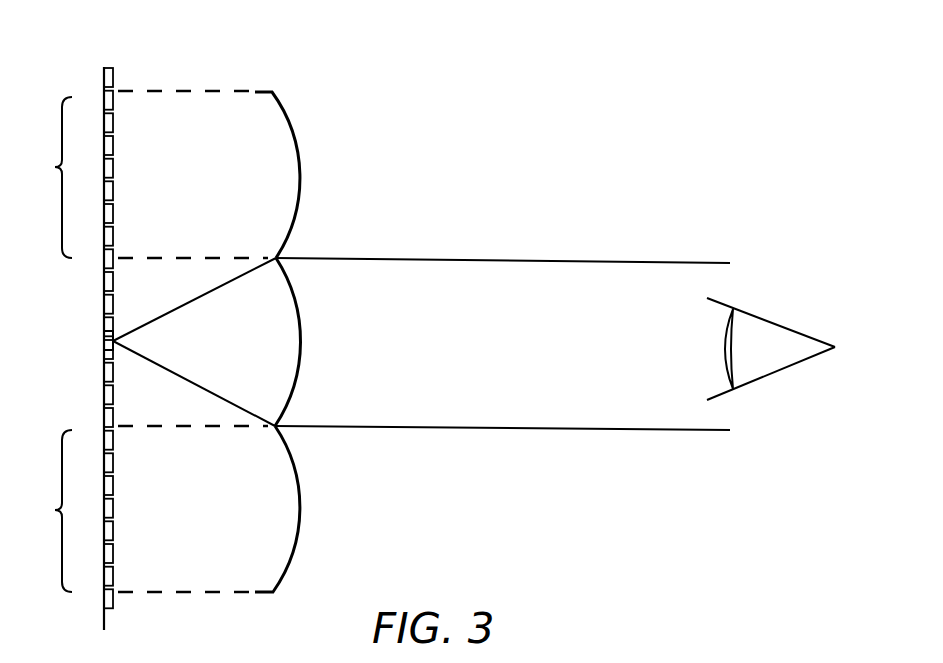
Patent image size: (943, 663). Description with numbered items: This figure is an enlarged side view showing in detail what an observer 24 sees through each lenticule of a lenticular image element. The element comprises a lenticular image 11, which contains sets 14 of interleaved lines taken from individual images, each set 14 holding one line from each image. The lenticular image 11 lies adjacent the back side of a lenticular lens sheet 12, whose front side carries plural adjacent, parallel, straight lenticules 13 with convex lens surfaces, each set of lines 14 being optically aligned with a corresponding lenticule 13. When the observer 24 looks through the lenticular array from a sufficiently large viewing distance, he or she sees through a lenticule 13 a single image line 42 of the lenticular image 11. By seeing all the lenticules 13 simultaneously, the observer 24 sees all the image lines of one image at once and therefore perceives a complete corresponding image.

The lenticular image 11 is at (118, 64).
The lenticular lens sheet 12 is at (185, 87).
The lenticule 13 is at (301, 189).
The set of interleaved lines 14 is at (50, 344).
The image line 42 is at (105, 341).
The observer 24 is at (782, 337).